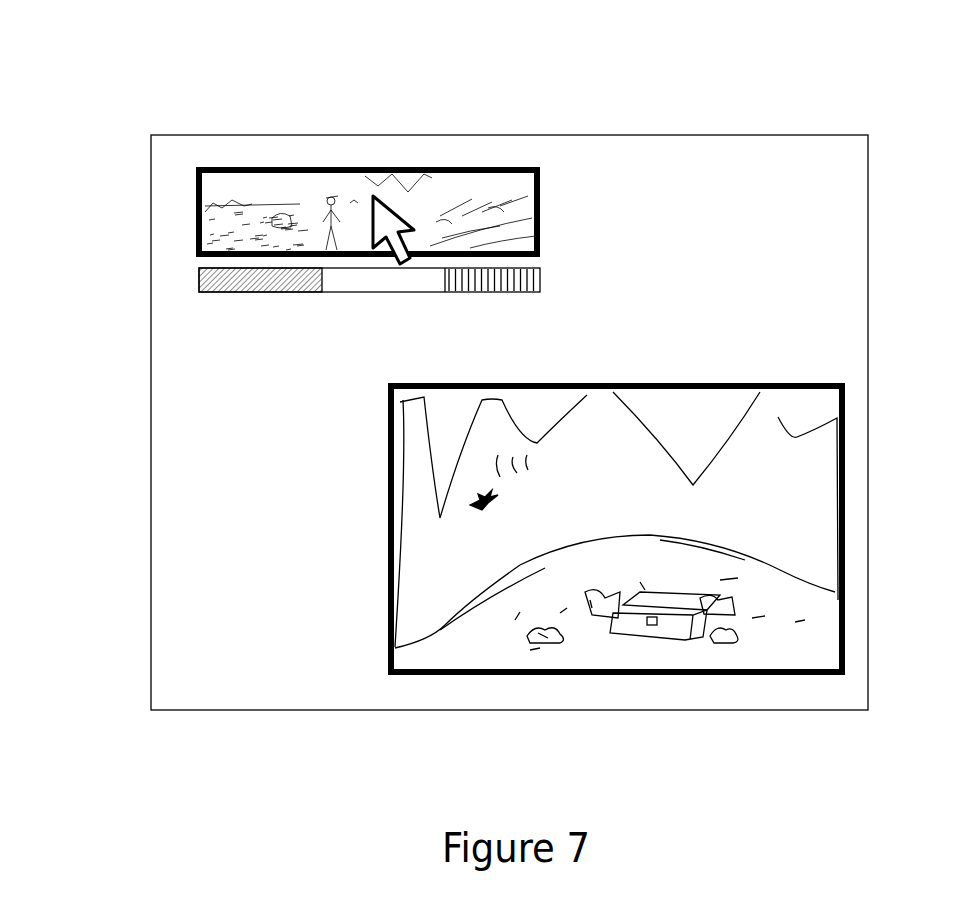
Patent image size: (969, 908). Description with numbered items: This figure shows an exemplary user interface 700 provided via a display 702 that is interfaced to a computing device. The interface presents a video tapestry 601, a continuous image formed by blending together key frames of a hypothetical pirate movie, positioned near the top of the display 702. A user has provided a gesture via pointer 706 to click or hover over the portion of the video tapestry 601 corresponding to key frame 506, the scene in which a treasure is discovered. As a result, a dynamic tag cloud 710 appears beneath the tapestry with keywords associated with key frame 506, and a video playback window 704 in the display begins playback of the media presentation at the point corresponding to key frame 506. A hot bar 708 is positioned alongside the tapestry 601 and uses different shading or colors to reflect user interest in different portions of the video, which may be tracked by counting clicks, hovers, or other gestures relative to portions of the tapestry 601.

The user interface 700 is at (166, 124).
The display 702 is at (825, 185).
The video tapestry 601 is at (540, 215).
The pointer 706 is at (393, 205).
The hot bar 708 is at (542, 278).
The dynamic tag cloud 710 is at (278, 329).
The video playback window 704 is at (718, 676).
The key frame 506 is at (475, 562).